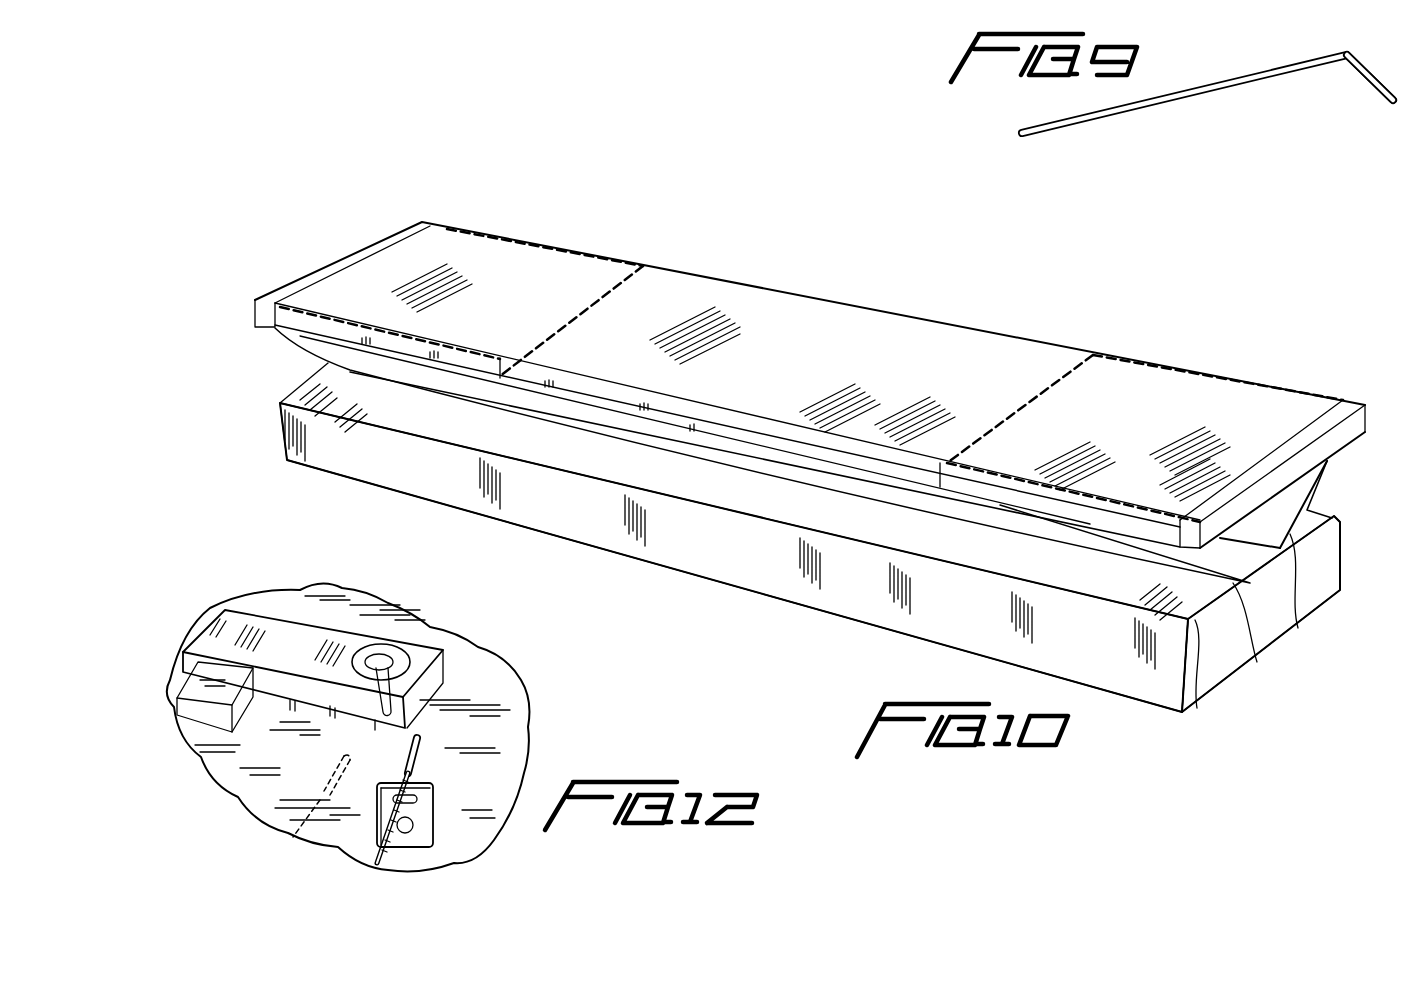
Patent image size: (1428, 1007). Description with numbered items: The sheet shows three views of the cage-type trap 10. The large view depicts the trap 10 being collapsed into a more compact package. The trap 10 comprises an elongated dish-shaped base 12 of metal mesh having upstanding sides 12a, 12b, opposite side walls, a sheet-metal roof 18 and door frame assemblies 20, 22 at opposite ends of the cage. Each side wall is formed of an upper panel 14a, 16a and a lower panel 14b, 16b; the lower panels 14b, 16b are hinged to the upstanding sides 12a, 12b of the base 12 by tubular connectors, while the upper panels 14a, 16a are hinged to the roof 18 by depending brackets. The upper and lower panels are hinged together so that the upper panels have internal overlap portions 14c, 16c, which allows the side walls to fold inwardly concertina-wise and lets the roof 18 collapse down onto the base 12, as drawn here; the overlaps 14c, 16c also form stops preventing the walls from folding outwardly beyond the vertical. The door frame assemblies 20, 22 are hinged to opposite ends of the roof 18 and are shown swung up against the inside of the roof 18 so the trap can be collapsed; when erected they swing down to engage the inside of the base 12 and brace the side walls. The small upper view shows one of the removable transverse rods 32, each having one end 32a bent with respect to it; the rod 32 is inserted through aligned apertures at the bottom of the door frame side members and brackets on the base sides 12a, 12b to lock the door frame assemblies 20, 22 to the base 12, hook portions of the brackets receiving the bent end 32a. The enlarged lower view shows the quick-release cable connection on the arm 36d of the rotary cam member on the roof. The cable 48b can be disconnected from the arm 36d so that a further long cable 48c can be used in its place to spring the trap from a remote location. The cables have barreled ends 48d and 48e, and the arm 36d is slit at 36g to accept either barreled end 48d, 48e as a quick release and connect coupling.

In FIG. 10, the cage-type trap 10 is at (698, 257).
In FIG. 10, the base 12 is at (758, 596).
In FIG. 10, the upstanding side of the base 12a is at (620, 525).
In FIG. 10, the upstanding side of the base 12b is at (1343, 557).
In FIG. 10, the upper panel of side wall 14a is at (1118, 548).
In FIG. 10, the lower panel of side wall 14b is at (1207, 679).
In FIG. 10, the internal overlap portion 14c is at (1257, 638).
In FIG. 10, the upper panel of side wall 16a is at (1330, 467).
In FIG. 10, the lower panel of side wall 16b is at (1332, 517).
In FIG. 10, the internal overlap portion 16c is at (1279, 596).
In FIG. 10, the roof 18 is at (870, 326).
In FIG. 10, the door frame assembly 20 is at (478, 262).
In FIG. 10, the door frame assembly 22 is at (1189, 402).
In FIG. 9, the removable transverse rod 32 is at (1167, 106).
In FIG. 9, the bent end of rod 32a is at (1368, 88).
In FIG. 12, the arm of rotary cam member 36d is at (280, 625).
In FIG. 12, the slit 36g is at (408, 692).
In FIG. 12, the cable 48b is at (441, 848).
In FIG. 12, the long cable 48c is at (300, 808).
In FIG. 12, the barreled end 48d is at (420, 752).
In FIG. 12, the barreled end 48e is at (323, 785).